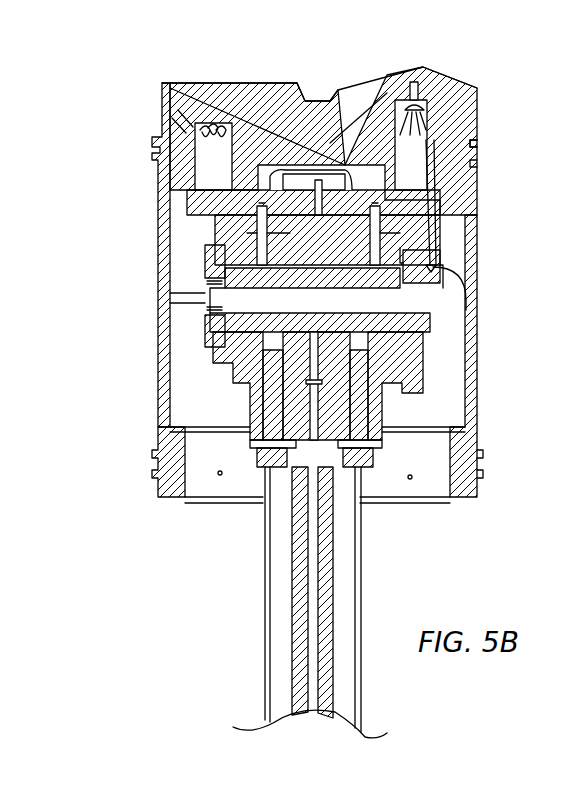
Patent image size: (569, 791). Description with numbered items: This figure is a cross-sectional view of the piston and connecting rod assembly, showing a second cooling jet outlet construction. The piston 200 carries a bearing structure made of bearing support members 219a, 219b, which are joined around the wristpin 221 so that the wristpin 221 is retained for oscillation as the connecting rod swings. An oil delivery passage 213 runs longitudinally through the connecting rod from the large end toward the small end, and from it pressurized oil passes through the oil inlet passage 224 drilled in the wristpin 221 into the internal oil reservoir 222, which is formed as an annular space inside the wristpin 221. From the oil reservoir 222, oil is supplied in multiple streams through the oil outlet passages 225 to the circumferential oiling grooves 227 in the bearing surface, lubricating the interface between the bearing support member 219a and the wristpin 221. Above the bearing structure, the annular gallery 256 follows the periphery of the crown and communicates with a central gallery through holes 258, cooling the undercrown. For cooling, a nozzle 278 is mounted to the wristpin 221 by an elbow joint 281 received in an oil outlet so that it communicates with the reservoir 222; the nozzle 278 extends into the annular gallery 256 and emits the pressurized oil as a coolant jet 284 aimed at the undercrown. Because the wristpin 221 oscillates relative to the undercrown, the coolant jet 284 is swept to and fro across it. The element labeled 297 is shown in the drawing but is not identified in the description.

The piston 200 is at (100, 364).
The oil delivery passage 213 is at (313, 604).
The bearing support member 219a is at (313, 135).
The bearing support member 219b is at (243, 367).
The wristpin 221 is at (207, 263).
The oil reservoir 222 is at (430, 243).
The oil inlet passage 224 is at (313, 364).
The oil outlet passages 225 is at (257, 233).
The circumferential oiling grooves 227 is at (262, 212).
The annular gallery 256 is at (230, 163).
The holes 258 is at (308, 172).
The nozzle 278 is at (437, 157).
The elbow joint 281 is at (443, 270).
The coolant jet 284 is at (420, 145).
The stem 297 is at (333, 165).